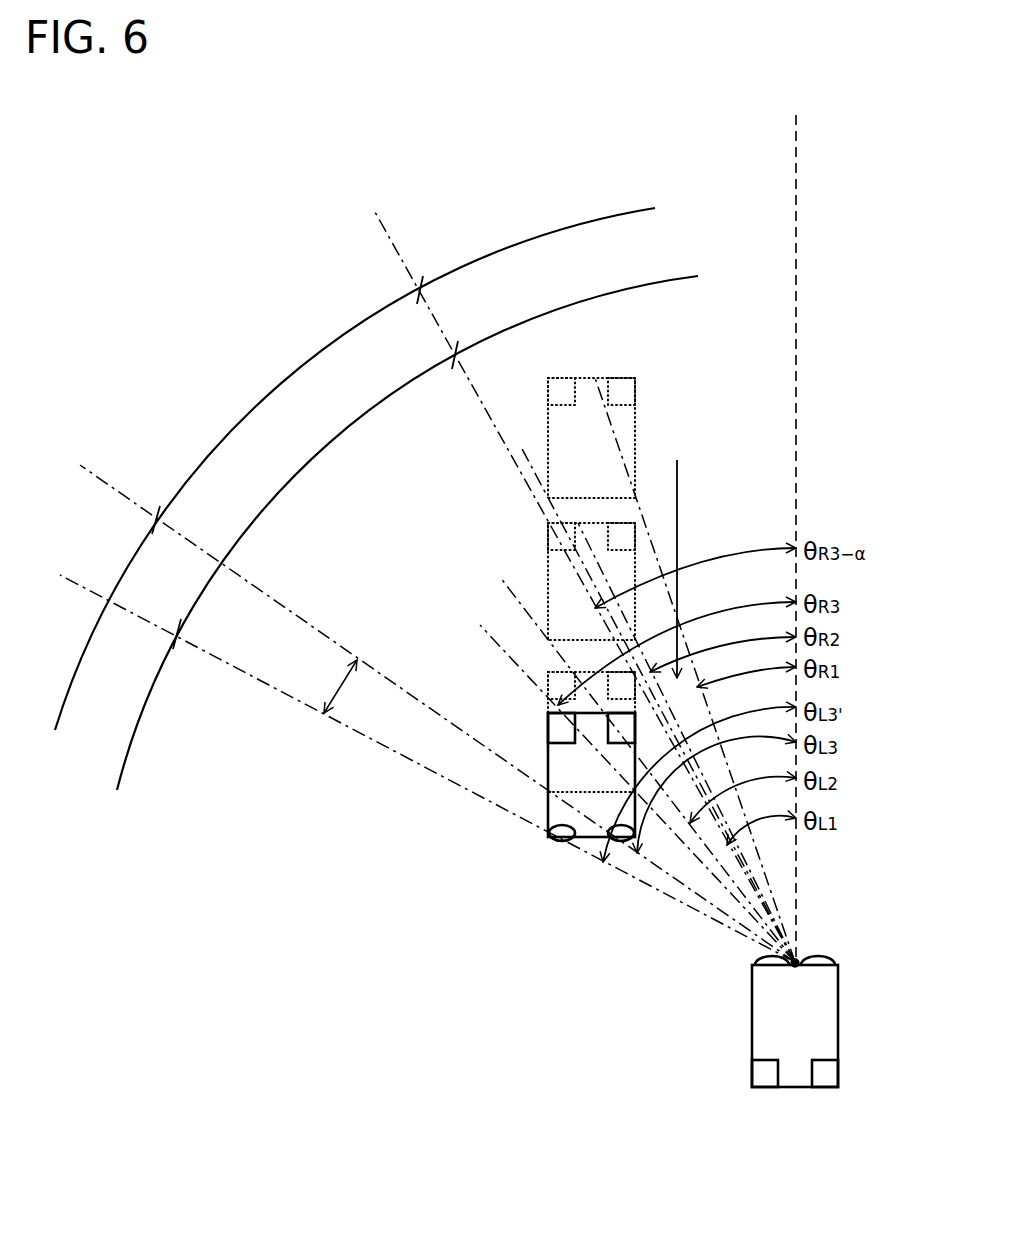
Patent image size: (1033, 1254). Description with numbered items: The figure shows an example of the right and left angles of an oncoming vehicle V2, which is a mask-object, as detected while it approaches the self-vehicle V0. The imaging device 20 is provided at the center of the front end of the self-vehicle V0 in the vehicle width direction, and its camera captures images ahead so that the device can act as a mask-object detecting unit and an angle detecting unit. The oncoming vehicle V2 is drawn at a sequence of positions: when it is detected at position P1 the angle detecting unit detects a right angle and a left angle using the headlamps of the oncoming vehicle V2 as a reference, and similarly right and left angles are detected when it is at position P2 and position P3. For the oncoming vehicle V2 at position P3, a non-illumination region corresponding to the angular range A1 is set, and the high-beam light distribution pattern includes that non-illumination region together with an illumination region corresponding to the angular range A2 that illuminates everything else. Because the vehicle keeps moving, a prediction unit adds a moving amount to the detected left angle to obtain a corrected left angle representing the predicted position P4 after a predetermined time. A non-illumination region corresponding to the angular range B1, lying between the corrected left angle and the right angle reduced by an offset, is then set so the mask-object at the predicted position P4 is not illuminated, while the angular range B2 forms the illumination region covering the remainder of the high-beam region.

The imaging device 20 is at (793, 968).
The self-vehicle V0 is at (750, 1042).
The oncoming vehicle V2 is at (564, 378).
The position P1 is at (614, 378).
The position P2 is at (548, 558).
The position P3 is at (548, 690).
The predicted position P4 is at (548, 800).
The angular range A1 is at (253, 380).
The angular range A2 is at (350, 468).
The angular range B1 is at (308, 439).
The angular range B2 is at (403, 533).